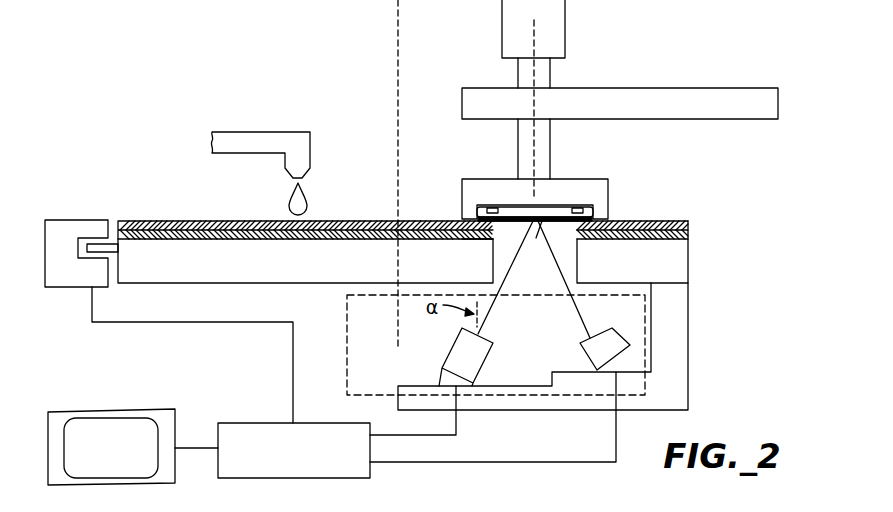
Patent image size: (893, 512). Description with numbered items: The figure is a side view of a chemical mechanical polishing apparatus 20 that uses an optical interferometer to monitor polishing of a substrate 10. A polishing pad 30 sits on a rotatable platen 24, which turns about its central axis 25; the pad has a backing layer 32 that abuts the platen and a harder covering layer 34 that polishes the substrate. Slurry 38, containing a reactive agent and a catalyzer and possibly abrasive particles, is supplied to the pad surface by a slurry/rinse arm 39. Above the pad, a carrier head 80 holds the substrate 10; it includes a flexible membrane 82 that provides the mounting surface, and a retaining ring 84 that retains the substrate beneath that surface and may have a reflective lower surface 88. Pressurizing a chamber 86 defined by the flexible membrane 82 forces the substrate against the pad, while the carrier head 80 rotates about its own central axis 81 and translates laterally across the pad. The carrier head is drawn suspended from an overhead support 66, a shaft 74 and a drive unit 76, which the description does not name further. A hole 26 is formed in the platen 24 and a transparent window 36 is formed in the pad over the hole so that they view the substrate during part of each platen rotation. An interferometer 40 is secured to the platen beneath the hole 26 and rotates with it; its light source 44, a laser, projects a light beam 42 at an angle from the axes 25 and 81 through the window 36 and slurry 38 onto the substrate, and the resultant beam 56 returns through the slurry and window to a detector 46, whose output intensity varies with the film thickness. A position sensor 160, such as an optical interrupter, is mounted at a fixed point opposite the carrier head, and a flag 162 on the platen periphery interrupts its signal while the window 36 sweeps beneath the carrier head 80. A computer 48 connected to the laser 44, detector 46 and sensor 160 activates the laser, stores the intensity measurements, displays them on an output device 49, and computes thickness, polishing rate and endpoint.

The substrate 10 is at (610, 216).
The chemical mechanical polishing apparatus 20 is at (197, 83).
The platen 24 is at (692, 272).
The central axis 25 is at (400, 33).
The hole 26 is at (585, 242).
The polishing pad 30 is at (188, 221).
The backing layer 32 is at (692, 234).
The covering layer 34 is at (692, 222).
The transparent window 36 is at (555, 238).
The slurry 38 is at (308, 205).
The slurry/rinse arm 39 is at (272, 132).
The interferometer 40 is at (347, 323).
The light beam 42 is at (491, 302).
The light source 44 is at (447, 352).
The detector 46 is at (585, 360).
The computer 48 is at (270, 423).
The output device 49 is at (160, 410).
The resultant beam 56 is at (583, 308).
The support arm 66 is at (683, 88).
The drive shaft 74 is at (550, 80).
The motor 76 is at (565, 30).
The carrier head 80 is at (602, 192).
The central axis 81 is at (535, 155).
The flexible membrane 82 is at (512, 212).
The retaining ring 84 is at (472, 214).
The chamber 86 is at (560, 212).
The reflective lower surface 88 is at (468, 239).
The position sensor 160 is at (80, 288).
The flag 162 is at (110, 222).